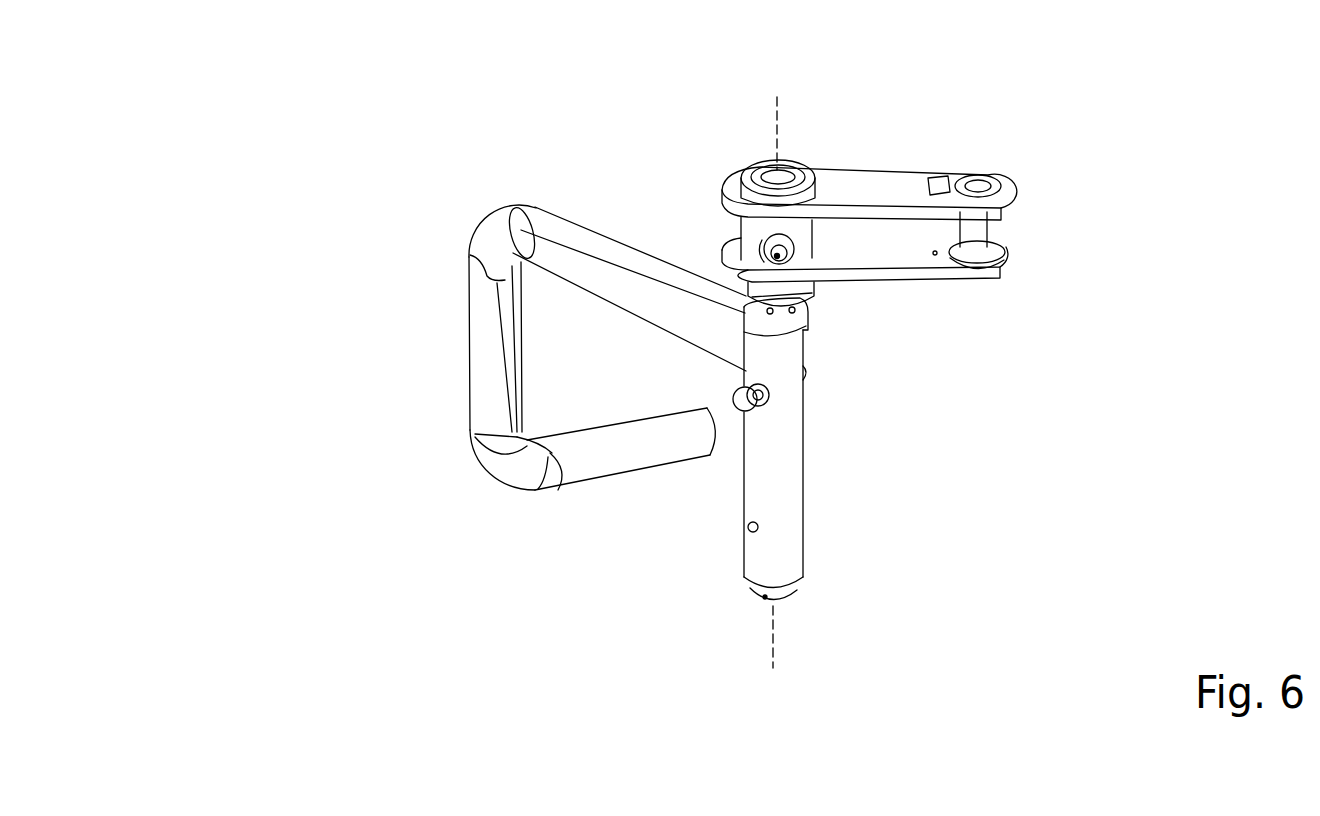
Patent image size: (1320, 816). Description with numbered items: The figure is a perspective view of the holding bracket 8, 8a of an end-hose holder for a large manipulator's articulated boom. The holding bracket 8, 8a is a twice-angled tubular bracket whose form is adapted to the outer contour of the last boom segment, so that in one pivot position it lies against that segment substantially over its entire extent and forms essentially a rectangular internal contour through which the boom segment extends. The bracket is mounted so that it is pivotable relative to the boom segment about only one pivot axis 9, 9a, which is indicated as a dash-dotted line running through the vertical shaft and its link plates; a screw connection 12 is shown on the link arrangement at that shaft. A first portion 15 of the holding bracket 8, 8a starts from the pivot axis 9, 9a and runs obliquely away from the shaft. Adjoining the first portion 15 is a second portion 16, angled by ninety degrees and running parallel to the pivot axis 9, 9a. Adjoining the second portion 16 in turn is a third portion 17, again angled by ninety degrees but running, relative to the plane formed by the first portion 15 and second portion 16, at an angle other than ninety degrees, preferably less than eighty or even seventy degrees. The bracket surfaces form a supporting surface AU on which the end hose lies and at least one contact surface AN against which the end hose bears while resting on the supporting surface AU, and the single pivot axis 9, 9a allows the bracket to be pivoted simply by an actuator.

The holding bracket 8 is at (453, 166).
The holding bracket 8a is at (497, 205).
The pivot axis 9 is at (861, 360).
The pivot axis 9a is at (781, 136).
The screw connection 12 is at (792, 239).
The first portion 15 is at (583, 258).
The second portion 16 is at (493, 386).
The third portion 17 is at (605, 453).
The supporting surface AU is at (453, 357).
The contact surface AN is at (513, 328).